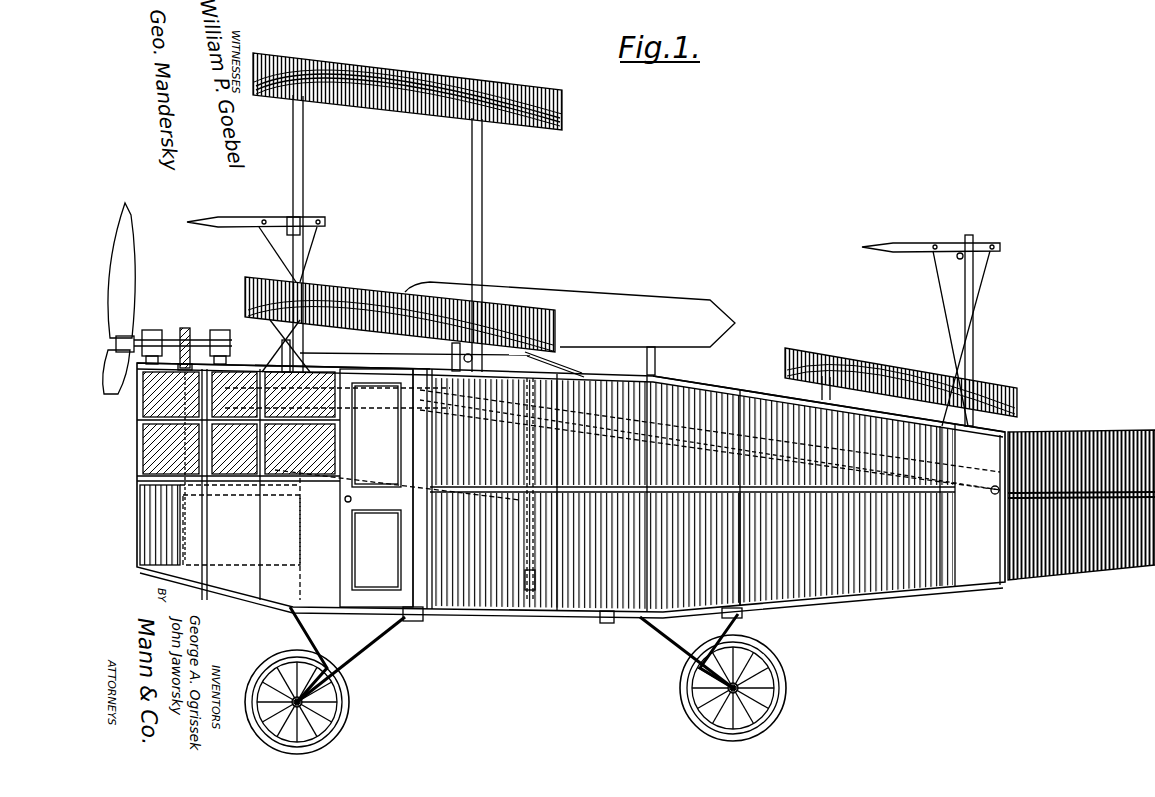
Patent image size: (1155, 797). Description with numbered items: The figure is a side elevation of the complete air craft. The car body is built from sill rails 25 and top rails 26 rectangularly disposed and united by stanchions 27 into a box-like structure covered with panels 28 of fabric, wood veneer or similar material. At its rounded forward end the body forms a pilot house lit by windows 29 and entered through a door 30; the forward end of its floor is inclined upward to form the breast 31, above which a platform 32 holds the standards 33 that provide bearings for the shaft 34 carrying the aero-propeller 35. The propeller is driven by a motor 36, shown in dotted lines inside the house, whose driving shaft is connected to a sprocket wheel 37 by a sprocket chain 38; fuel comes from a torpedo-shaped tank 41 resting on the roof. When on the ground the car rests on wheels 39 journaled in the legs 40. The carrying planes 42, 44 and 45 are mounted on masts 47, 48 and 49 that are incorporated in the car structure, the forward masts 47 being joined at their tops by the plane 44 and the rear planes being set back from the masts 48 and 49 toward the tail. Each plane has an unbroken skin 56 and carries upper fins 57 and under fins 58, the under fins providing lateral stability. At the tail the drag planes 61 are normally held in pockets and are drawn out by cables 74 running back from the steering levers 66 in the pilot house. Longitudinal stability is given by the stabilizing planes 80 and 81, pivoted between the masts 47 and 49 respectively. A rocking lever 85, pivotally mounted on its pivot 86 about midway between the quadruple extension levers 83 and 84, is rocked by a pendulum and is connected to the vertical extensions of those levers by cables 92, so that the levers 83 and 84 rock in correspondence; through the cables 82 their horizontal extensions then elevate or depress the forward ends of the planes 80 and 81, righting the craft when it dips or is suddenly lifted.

The sill rails 25 is at (574, 614).
The top rails 26 is at (698, 393).
The stanchions 27 is at (735, 570).
The panels 28 is at (606, 601).
The windows 29 is at (230, 462).
The door 30 is at (372, 580).
The breast 31 is at (222, 587).
The platform 32 is at (244, 372).
The standards 33 is at (152, 333).
The shaft 34 is at (212, 340).
The aero-propeller 35 is at (122, 320).
The motor 36 is at (300, 532).
The sprocket wheel 37 is at (185, 328).
The sprocket chain 38 is at (190, 340).
The wheels 39 is at (350, 706).
The legs 40 is at (368, 658).
The torpedo-shaped tank 41 is at (612, 302).
The carrying plane 42 is at (372, 300).
The carrying plane 44 is at (556, 112).
The carrying plane 45 is at (1018, 400).
The masts 47 is at (300, 172).
The mast 48 is at (826, 398).
The mast 49 is at (974, 357).
The skin 56 is at (368, 76).
The upper fins 57 is at (500, 96).
The under fins 58 is at (397, 107).
The drag planes 61 is at (1132, 440).
The steering levers 66 is at (258, 390).
The cables 74 is at (994, 478).
The forward stabilizing plane 80 is at (234, 225).
The rear stabilizing plane 81 is at (893, 246).
The cables 82 is at (268, 240).
The quadruple extension lever 83 is at (294, 406).
The quadruple extension lever 84 is at (948, 472).
The rocking lever 85 is at (415, 357).
The pivot 86 is at (516, 489).
The cables 92 is at (568, 363).